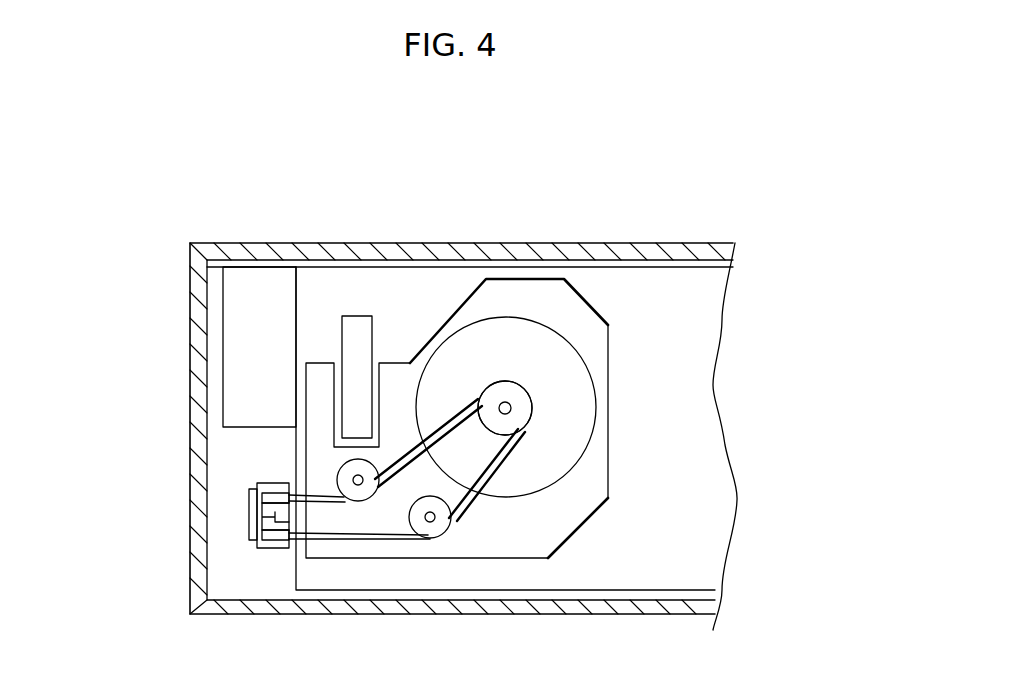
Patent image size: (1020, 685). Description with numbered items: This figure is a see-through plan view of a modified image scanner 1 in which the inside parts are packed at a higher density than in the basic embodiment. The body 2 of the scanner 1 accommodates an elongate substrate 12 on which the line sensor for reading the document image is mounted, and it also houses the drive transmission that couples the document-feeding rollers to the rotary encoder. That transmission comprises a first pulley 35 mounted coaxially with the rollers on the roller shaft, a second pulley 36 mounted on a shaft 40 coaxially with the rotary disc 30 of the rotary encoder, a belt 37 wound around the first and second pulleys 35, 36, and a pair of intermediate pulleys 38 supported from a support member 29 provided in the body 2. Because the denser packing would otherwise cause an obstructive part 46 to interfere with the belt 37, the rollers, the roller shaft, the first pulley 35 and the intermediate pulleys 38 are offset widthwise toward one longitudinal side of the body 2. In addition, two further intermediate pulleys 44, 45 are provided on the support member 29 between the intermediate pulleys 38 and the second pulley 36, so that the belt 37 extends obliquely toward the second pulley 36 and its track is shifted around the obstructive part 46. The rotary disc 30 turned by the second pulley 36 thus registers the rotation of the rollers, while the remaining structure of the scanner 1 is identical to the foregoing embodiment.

The scanner 1 is at (150, 255).
The body 2 is at (685, 243).
The elongate substrate 12 is at (661, 575).
The support member 29 is at (540, 550).
The rotary disc 30 is at (482, 318).
The first pulley 35 is at (249, 520).
The second pulley 36 is at (505, 402).
The belt 37 is at (472, 498).
The intermediate pulleys 38 is at (268, 490).
The shaft 40 is at (511, 405).
The additional intermediate pulley 44 is at (357, 495).
The additional intermediate pulley 45 is at (435, 532).
The obstructive part 46 is at (342, 333).